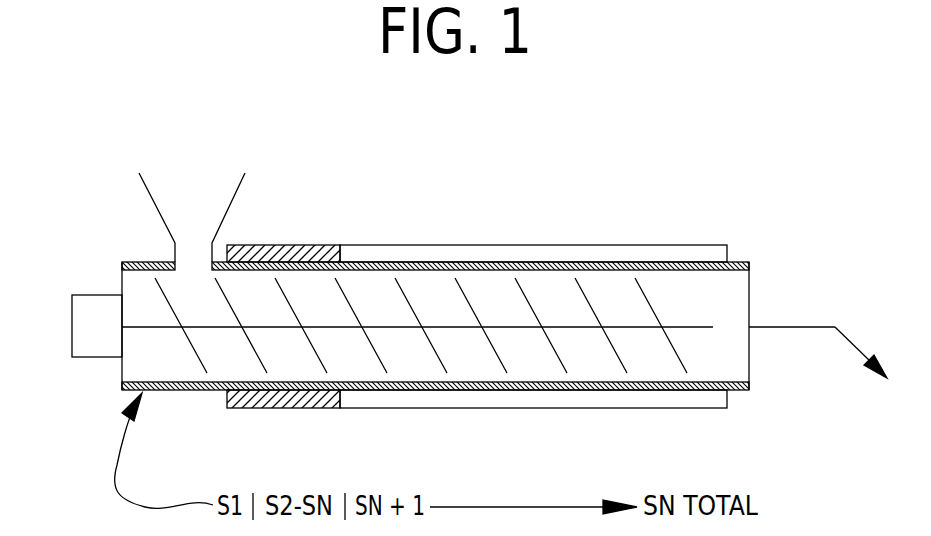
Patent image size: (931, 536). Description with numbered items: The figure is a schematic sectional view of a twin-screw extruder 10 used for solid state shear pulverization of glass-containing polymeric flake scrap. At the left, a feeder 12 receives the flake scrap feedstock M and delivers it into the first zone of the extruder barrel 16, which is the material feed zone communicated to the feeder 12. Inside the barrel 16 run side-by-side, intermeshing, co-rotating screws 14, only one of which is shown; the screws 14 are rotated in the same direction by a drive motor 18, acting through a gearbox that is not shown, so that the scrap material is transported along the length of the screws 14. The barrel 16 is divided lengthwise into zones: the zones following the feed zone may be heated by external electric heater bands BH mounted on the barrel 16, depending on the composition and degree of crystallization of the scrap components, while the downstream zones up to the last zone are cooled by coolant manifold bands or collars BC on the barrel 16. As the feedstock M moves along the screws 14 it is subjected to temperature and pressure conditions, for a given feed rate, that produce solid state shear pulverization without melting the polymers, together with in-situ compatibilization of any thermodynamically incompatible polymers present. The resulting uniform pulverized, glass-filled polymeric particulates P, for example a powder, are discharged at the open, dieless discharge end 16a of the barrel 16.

The extruder 10 is at (650, 203).
The feeder 12 is at (155, 206).
The twin screws 14 is at (195, 353).
The extruder barrel 16 is at (482, 278).
The discharge end 16a is at (749, 290).
The drive motor 18 is at (72, 323).
The electric heater bands BH is at (322, 222).
The coolant manifold bands BC is at (528, 410).
The flake scrap feedstock M is at (193, 170).
The pulverized particulates P is at (805, 328).